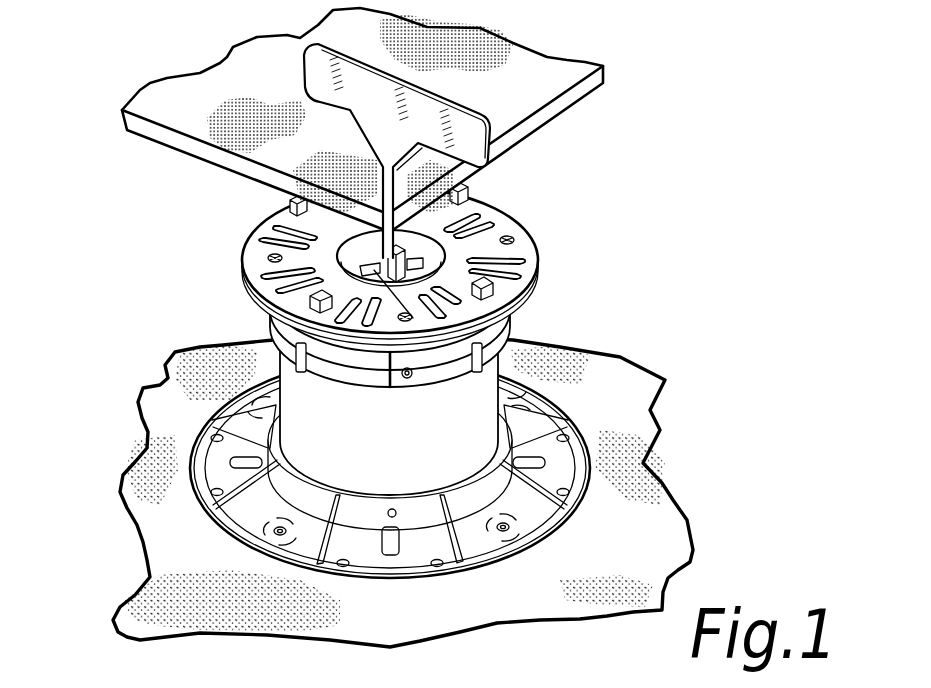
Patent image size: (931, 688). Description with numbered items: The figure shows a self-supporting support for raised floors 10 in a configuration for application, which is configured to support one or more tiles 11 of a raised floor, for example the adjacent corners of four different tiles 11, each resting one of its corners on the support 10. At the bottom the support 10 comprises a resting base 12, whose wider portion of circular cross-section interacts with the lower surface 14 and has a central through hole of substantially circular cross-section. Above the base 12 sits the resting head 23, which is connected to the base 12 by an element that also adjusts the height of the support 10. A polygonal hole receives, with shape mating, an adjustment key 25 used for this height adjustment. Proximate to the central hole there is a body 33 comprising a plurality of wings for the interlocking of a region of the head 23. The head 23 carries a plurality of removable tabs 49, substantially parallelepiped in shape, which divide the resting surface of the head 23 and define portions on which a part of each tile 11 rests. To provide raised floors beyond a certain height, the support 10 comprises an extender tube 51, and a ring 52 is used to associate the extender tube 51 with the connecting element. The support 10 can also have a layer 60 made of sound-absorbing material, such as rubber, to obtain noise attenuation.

The support for raised floors 10 is at (427, 358).
The tile 11 is at (567, 58).
The resting base 12 is at (582, 506).
The lower surface 14 is at (163, 573).
The resting head 23 is at (542, 247).
The adjustment key 25 is at (322, 68).
The body 33 is at (470, 355).
The removable tabs 49 is at (287, 208).
The extender tube 51 is at (310, 440).
The ring 52 is at (247, 304).
The layer of sound-absorbing material 60 is at (247, 228).